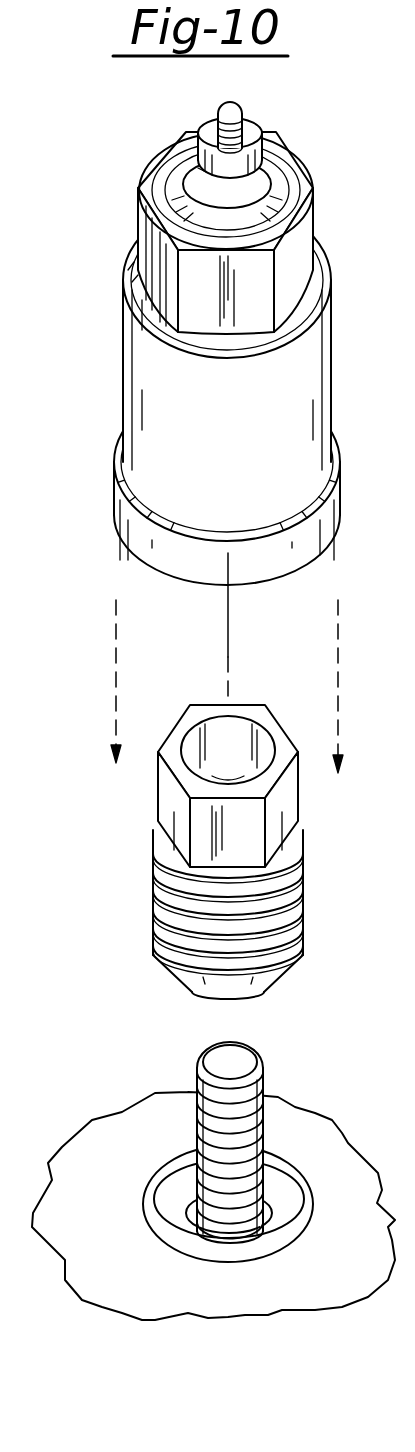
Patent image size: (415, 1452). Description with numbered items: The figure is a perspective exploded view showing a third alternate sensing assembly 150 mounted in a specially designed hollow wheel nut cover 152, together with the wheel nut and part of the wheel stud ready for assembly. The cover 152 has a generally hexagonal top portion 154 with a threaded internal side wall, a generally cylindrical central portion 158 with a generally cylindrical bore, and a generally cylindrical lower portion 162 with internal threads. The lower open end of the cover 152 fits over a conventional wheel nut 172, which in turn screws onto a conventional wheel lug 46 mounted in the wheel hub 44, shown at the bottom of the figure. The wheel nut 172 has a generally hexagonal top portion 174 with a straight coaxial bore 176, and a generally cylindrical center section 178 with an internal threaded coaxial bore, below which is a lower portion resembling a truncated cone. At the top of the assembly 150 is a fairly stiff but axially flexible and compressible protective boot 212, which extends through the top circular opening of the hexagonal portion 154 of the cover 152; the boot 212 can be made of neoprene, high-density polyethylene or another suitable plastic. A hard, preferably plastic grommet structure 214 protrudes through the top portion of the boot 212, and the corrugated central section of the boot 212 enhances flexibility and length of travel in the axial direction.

The wheel hub 44 is at (152, 1123).
The wheel lug 46 is at (242, 1060).
The third alternate sensing assembly 150 is at (206, 320).
The wheel nut cover 152 is at (185, 358).
The hexagonal top portion 154 is at (145, 218).
The cylindrical central portion 158 is at (140, 370).
The cylindrical lower portion 162 is at (116, 497).
The wheel nut 172 is at (204, 830).
The hexagonal top portion 174 is at (172, 800).
The straight coaxial bore 176 is at (210, 740).
The cylindrical center section 178 is at (297, 930).
The protective boot 212 is at (271, 177).
The grommet structure 214 is at (232, 108).